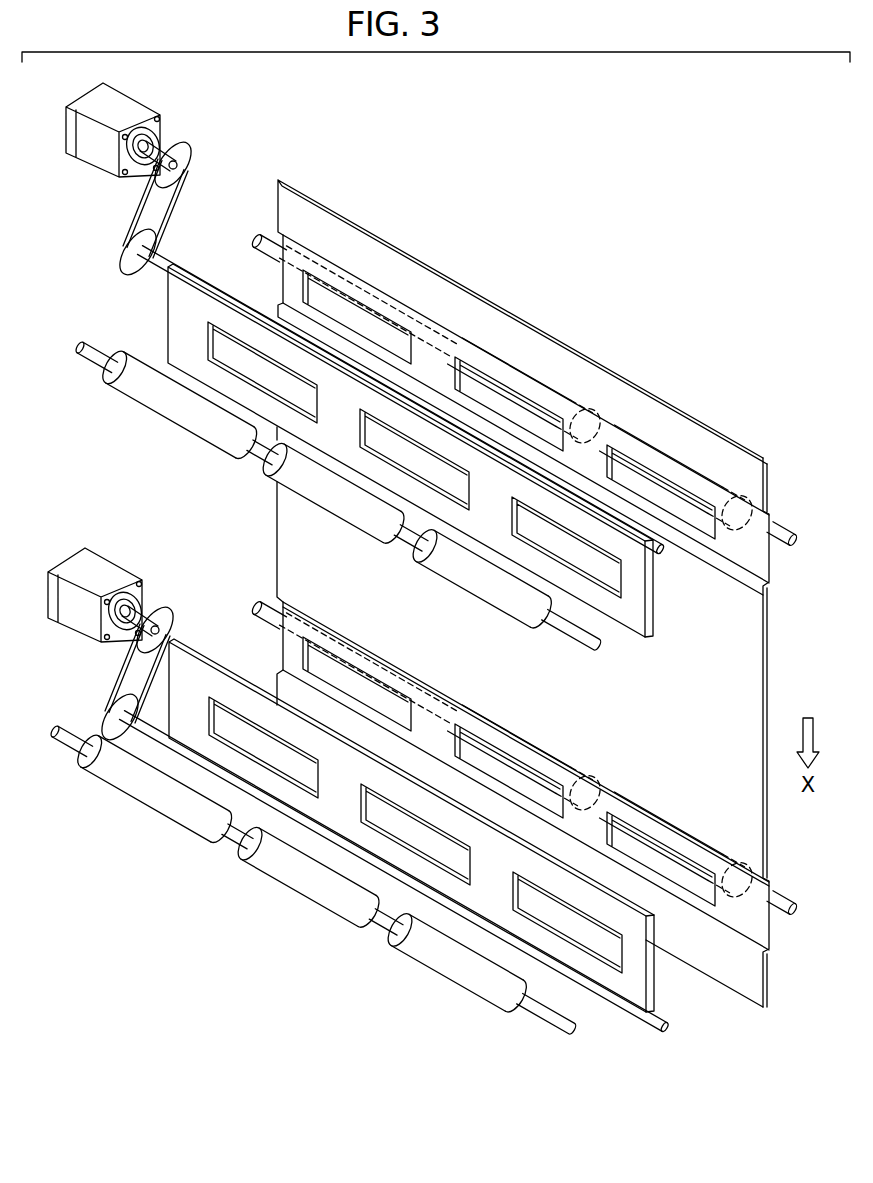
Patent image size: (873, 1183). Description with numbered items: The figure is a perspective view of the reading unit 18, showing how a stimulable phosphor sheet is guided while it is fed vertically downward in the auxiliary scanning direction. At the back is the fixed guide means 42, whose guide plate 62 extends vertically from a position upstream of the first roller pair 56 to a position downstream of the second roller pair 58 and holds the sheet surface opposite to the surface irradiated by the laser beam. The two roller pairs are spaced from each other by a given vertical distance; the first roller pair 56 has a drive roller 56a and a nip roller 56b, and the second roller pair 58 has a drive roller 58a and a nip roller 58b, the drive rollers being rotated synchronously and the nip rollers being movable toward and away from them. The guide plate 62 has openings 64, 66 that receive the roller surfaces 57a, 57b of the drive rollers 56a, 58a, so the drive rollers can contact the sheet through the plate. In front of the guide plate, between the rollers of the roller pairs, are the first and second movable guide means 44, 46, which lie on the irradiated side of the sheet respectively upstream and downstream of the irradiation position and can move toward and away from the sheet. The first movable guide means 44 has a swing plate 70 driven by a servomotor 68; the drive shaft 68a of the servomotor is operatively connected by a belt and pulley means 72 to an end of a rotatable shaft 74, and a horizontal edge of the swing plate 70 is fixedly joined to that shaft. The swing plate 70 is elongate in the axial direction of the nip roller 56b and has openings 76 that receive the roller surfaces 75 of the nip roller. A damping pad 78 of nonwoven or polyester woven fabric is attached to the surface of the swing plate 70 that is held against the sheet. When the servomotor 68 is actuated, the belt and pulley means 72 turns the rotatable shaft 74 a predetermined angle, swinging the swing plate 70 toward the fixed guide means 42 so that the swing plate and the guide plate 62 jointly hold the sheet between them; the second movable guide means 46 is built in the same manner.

The reading unit 18 is at (428, 570).
The fixed guide means 42 is at (766, 722).
The first movable guide means 44 is at (433, 388).
The second movable guide means 46 is at (428, 803).
The first roller pair 56 is at (145, 408).
The drive roller 56a is at (776, 528).
The nip roller 56b is at (480, 600).
The roller surface 57a is at (677, 497).
The roller surface 57b is at (675, 870).
The second roller pair 58 is at (165, 820).
The drive roller 58a is at (776, 895).
The nip roller 58b is at (420, 968).
The guide plate 62 is at (523, 388).
The opening 64 is at (688, 528).
The opening 66 is at (683, 893).
The servomotor 68 is at (128, 105).
The drive shaft 68a is at (154, 140).
The swing plate 70 is at (435, 632).
The belt and pulley means 72 is at (178, 213).
The rotatable shaft 74 is at (186, 270).
The roller surface 75 is at (445, 771).
The opening 76 is at (600, 562).
The damping pad 78 is at (657, 600).